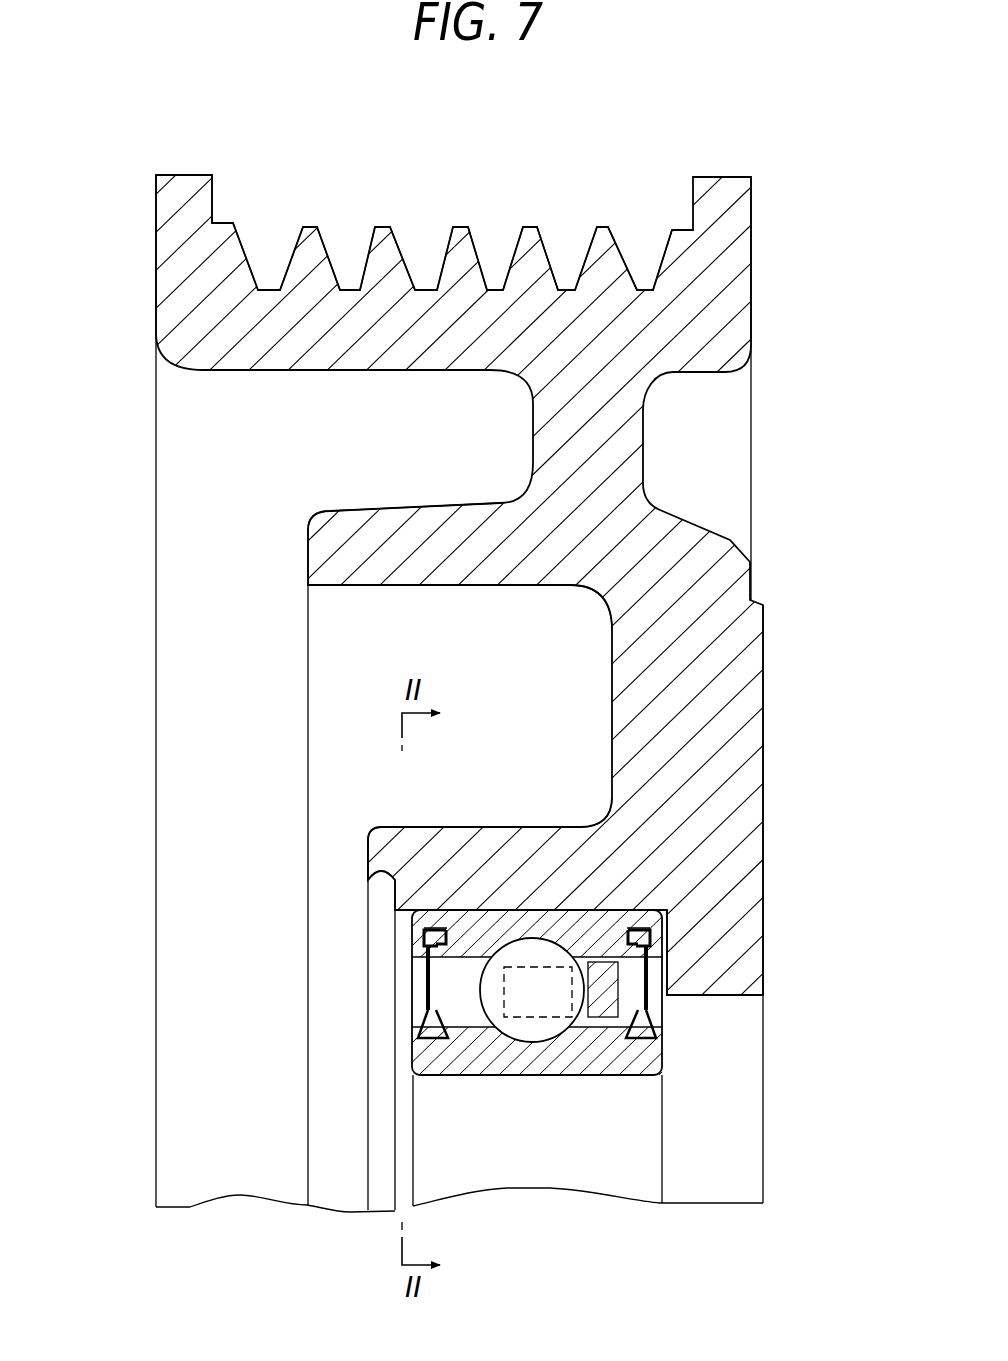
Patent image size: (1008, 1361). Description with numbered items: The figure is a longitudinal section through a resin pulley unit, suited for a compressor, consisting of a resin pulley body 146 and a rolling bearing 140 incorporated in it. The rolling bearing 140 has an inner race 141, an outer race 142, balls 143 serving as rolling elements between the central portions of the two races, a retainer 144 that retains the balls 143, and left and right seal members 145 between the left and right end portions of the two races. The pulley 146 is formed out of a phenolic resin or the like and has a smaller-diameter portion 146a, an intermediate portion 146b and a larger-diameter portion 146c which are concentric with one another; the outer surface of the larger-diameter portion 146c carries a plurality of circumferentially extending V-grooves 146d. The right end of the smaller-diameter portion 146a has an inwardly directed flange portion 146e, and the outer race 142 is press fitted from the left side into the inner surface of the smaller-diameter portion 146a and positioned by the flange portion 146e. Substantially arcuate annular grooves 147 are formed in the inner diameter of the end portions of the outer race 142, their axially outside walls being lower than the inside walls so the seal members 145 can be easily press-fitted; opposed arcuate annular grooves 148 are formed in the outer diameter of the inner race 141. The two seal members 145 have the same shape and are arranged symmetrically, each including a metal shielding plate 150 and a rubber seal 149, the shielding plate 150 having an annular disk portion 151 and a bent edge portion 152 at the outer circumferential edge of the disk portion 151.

The rolling bearing 140 is at (504, 680).
The inner race 141 is at (428, 1050).
The outer race 142 is at (393, 890).
The balls 143 is at (523, 1028).
The retainer 144 is at (592, 1020).
The seal member 145 is at (536, 1005).
The resin pulley body 146 is at (742, 565).
The smaller-diameter portion 146a is at (383, 850).
The intermediate portion 146b is at (308, 548).
The larger-diameter portion 146c is at (172, 262).
The V-grooves 146d is at (378, 243).
The inwardly directed flange portion 146e is at (752, 968).
The annular groove 147 is at (450, 925).
The annular groove 148 is at (450, 1062).
The rubber seal 149 is at (415, 1057).
The shielding plate 150 is at (425, 955).
The annular disk portion 151 is at (430, 972).
The bent edge portion 152 is at (425, 935).